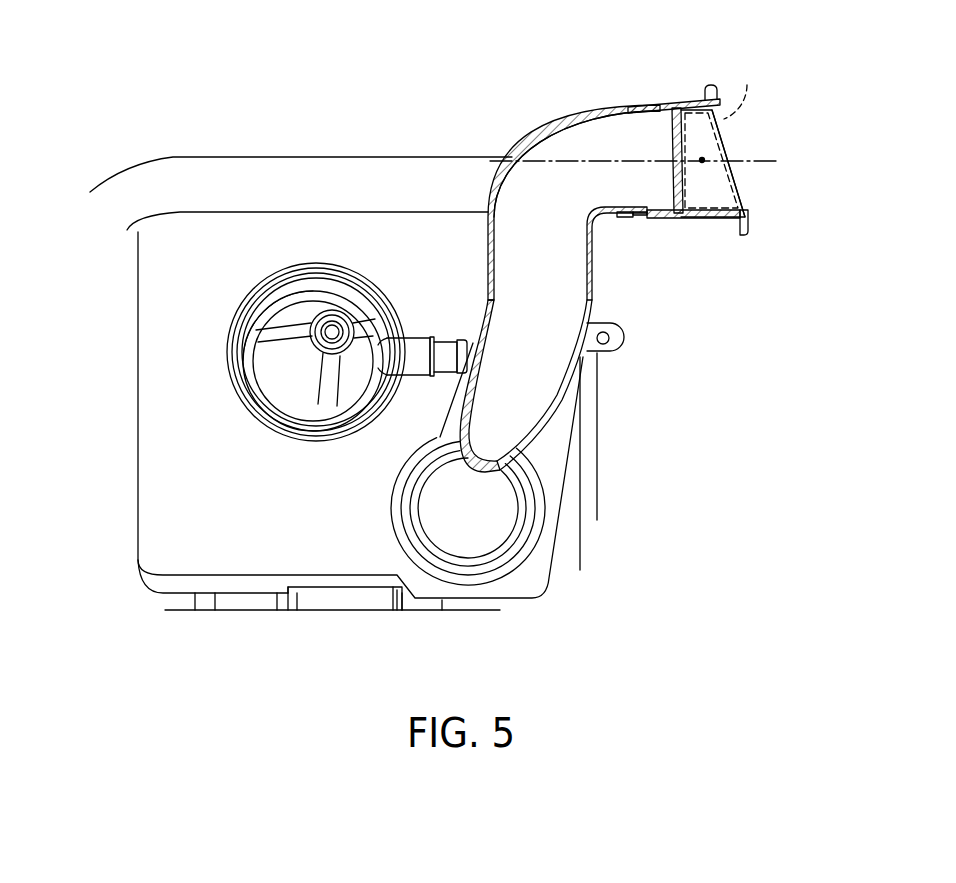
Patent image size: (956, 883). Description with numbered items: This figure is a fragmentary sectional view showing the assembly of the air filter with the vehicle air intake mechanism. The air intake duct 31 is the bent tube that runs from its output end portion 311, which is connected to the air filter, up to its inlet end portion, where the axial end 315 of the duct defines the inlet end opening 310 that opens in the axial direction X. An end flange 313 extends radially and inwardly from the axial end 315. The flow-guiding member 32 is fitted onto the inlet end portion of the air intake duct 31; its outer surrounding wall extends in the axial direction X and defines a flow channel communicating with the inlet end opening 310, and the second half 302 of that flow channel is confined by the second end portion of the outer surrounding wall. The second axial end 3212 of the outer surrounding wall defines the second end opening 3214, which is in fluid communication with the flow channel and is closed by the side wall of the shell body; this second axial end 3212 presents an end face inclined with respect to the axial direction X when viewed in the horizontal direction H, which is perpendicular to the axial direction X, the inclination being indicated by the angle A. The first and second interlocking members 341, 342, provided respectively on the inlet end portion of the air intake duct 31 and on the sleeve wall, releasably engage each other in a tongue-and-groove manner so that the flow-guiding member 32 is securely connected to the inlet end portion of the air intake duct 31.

The air intake duct 31 is at (538, 128).
The inlet end opening 310 is at (672, 152).
The output end portion 311 is at (425, 510).
The end flange 313 is at (673, 120).
The axial end 315 is at (670, 215).
The flow-guiding member 32 is at (693, 90).
The second axial end 3212 is at (720, 96).
The second end opening 3214 is at (731, 146).
The second half 302 is at (727, 182).
The first interlocking member 341 is at (637, 220).
The second interlocking member 342 is at (623, 218).
The angle A is at (738, 88).
The horizontal direction H is at (702, 163).
The axial direction X is at (760, 157).